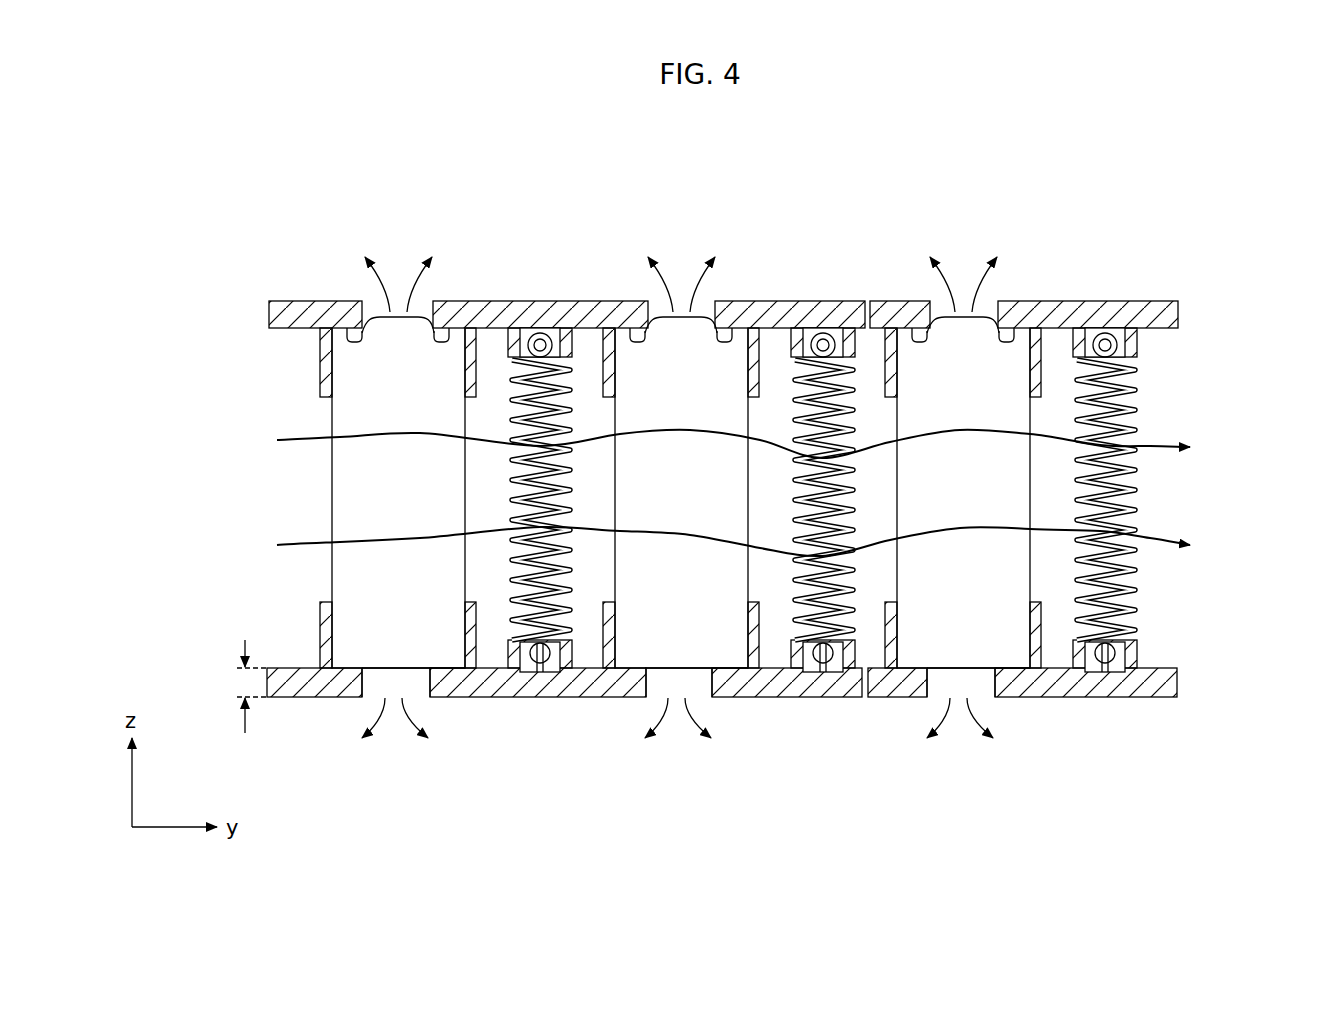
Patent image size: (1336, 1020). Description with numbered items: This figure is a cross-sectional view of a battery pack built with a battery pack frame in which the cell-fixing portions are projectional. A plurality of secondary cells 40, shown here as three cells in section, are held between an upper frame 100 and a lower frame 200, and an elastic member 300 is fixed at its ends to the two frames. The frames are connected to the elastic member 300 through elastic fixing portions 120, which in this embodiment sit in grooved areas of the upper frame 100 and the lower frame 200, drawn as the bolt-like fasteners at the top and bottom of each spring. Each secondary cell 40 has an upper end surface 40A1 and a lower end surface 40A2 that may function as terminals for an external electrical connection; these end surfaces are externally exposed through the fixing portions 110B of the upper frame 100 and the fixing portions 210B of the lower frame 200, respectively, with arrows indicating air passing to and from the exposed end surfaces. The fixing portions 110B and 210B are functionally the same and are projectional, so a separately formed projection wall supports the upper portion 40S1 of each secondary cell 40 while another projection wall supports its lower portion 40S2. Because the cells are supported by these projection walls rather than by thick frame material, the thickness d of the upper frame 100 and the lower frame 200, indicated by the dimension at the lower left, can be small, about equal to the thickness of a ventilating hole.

The upper frame 100 is at (1178, 330).
The lower frame 200 is at (1177, 676).
The secondary cell 40 is at (345, 490).
The upper portion of the secondary cell 40S1 is at (322, 362).
The lower portion of the secondary cell 40S2 is at (322, 625).
The upper end surface 40A1 is at (398, 316).
The lower end surface 40A2 is at (408, 698).
The fixing portion of the upper frame 110B is at (432, 328).
The fixing portion of the lower frame 210B is at (393, 698).
The elastic fixing portion 120 is at (542, 333).
The elastic member 300 is at (568, 358).
The thickness d is at (241, 686).